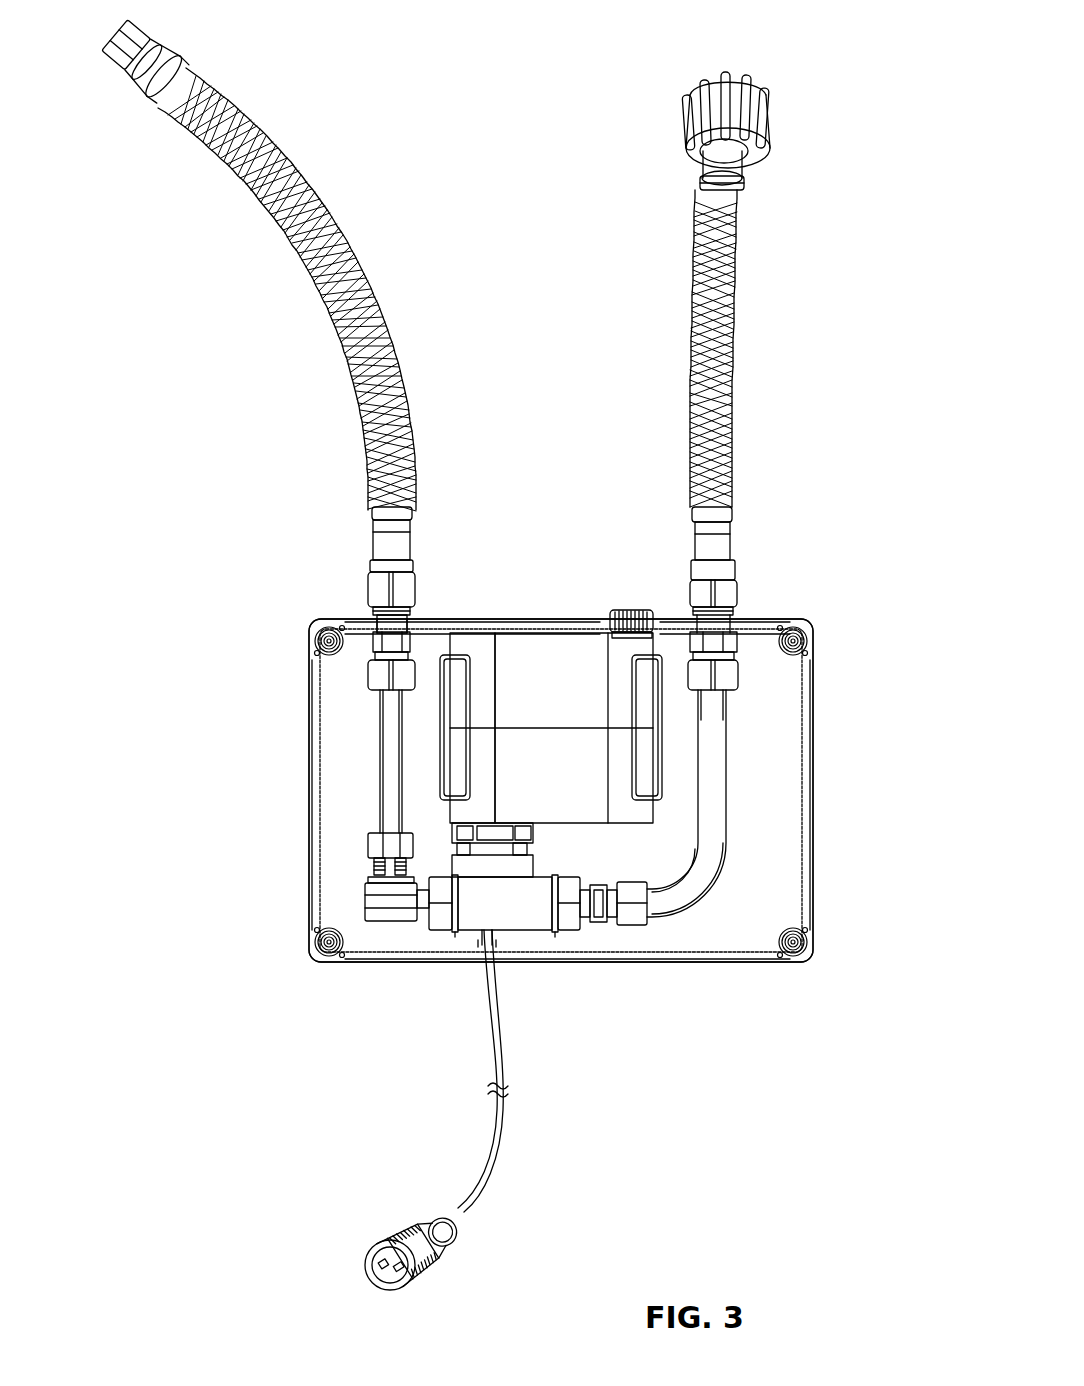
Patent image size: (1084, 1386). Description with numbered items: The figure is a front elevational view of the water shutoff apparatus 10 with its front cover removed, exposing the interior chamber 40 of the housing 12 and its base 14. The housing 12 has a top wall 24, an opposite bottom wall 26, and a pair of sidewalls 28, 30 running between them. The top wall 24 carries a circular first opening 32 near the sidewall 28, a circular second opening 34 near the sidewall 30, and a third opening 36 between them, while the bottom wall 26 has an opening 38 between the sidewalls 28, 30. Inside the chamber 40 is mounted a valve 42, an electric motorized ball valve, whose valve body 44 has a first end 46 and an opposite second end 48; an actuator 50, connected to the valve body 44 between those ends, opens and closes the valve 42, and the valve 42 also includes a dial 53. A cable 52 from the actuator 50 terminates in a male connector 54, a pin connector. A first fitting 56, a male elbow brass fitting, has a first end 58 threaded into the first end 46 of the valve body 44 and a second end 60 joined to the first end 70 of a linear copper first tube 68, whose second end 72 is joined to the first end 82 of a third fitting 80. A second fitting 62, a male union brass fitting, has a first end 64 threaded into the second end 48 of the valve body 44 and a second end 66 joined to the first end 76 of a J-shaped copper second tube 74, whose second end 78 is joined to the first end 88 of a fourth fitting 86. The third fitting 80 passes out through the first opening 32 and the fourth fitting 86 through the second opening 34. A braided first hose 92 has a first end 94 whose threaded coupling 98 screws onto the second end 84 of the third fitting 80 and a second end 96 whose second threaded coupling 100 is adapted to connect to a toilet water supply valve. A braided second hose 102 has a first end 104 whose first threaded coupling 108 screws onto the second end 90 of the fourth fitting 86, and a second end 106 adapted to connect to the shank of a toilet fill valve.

The water shutoff apparatus 10 is at (826, 621).
The housing 12 is at (815, 740).
The base 14 is at (808, 795).
The top wall 24 is at (510, 625).
The bottom wall 26 is at (533, 962).
The sidewall 28 is at (311, 763).
The sidewall 30 is at (812, 697).
The first opening 32 is at (373, 618).
The second opening 34 is at (742, 620).
The third opening 36 is at (608, 615).
The opening 38 is at (473, 947).
The interior chamber 40 is at (357, 742).
The valve 42 is at (450, 815).
The valve body 44 is at (505, 932).
The first end 46 is at (450, 935).
The second end 48 is at (557, 933).
The actuator 50 is at (475, 647).
The cable 52 is at (495, 1128).
The dial 53 is at (628, 612).
The male connector 54 is at (403, 1248).
The first fitting 56 is at (380, 907).
The first end 58 is at (437, 913).
The second end 60 is at (372, 845).
The second fitting 62 is at (597, 930).
The first end 64 is at (575, 880).
The second end 66 is at (640, 918).
The first tube 68 is at (390, 788).
The first end 70 is at (370, 837).
The second end 72 is at (387, 693).
The second tube 74 is at (715, 762).
The first end 76 is at (660, 900).
The second end 78 is at (712, 703).
The third fitting 80 is at (403, 583).
The first end 82 is at (378, 673).
The second end 84 is at (413, 607).
The fourth fitting 86 is at (728, 645).
The first end 88 is at (727, 673).
The second end 90 is at (732, 603).
The first hose 92 is at (335, 305).
The first end 94 is at (405, 583).
The second end 96 is at (121, 66).
The threaded coupling 98 is at (373, 588).
The second threaded coupling 100 is at (142, 38).
The second hose 102 is at (720, 345).
The first end 104 is at (735, 588).
The second end 106 is at (744, 186).
The first threaded coupling 108 is at (768, 115).